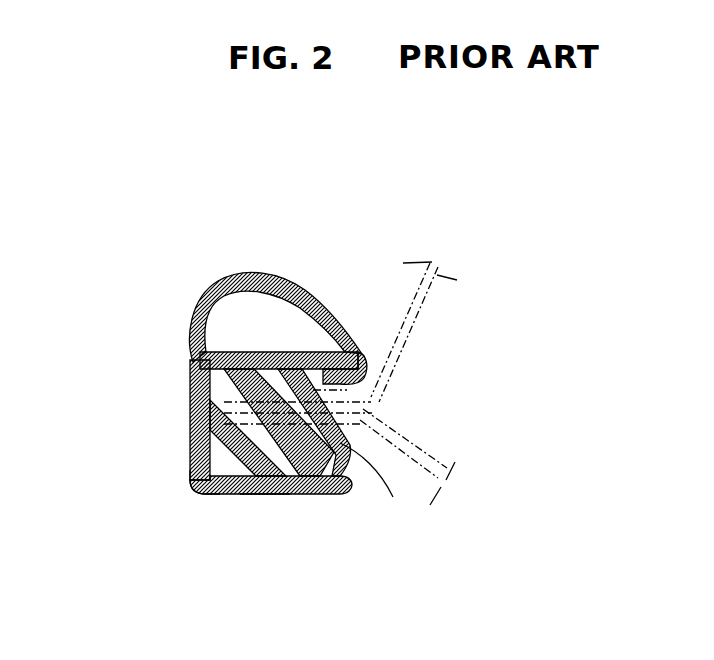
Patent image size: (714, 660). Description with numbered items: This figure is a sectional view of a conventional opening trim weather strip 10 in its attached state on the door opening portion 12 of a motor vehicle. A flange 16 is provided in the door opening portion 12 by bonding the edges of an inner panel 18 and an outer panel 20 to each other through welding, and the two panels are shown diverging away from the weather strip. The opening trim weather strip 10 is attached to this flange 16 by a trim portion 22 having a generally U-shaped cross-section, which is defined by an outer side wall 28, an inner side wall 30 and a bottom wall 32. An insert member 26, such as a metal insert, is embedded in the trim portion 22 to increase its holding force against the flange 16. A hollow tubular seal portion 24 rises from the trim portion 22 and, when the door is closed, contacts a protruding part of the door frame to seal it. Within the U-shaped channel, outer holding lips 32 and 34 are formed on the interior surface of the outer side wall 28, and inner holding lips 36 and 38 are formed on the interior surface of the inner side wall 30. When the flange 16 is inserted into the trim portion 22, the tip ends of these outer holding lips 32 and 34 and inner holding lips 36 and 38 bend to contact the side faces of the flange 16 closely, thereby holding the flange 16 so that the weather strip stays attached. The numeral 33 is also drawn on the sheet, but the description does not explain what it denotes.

The opening trim weather strip 10 is at (273, 389).
The door opening portion 12 is at (298, 418).
The flange 16 is at (201, 442).
The inner panel 18 is at (438, 457).
The outer panel 20 is at (368, 332).
The trim portion 22 is at (271, 534).
The tubular seal portion 24 is at (219, 317).
The insert member 26 is at (146, 522).
The outer side wall 28 is at (262, 368).
The inner side wall 30 is at (258, 543).
The bottom wall 32 is at (143, 420).
The hook portion 33 is at (418, 374).
The outer holding lip 34 is at (217, 355).
The inner holding lip 36 is at (394, 515).
The inner holding lip 38 is at (179, 459).